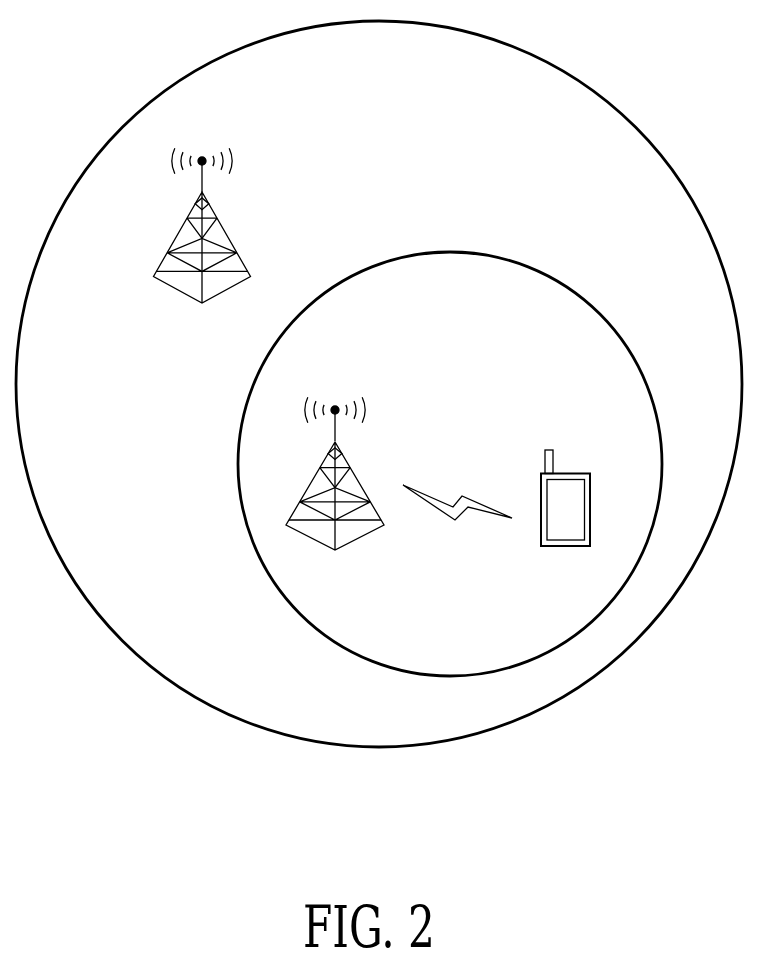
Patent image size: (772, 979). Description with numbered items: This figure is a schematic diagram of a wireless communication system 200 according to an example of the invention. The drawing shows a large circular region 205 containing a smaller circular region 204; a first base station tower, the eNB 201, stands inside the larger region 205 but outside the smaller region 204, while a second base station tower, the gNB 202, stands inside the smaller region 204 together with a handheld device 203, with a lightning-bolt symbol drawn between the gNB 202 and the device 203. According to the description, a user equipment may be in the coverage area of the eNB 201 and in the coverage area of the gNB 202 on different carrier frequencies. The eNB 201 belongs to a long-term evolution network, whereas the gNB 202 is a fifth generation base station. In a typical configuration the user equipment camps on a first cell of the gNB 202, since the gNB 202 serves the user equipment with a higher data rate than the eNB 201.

The wireless communication system 200 is at (718, 725).
The eNB 201 is at (173, 243).
The gNB 202 is at (305, 492).
The user equipment 203 is at (590, 498).
The small cell coverage area 204 is at (582, 295).
The macro cell coverage area 205 is at (653, 142).